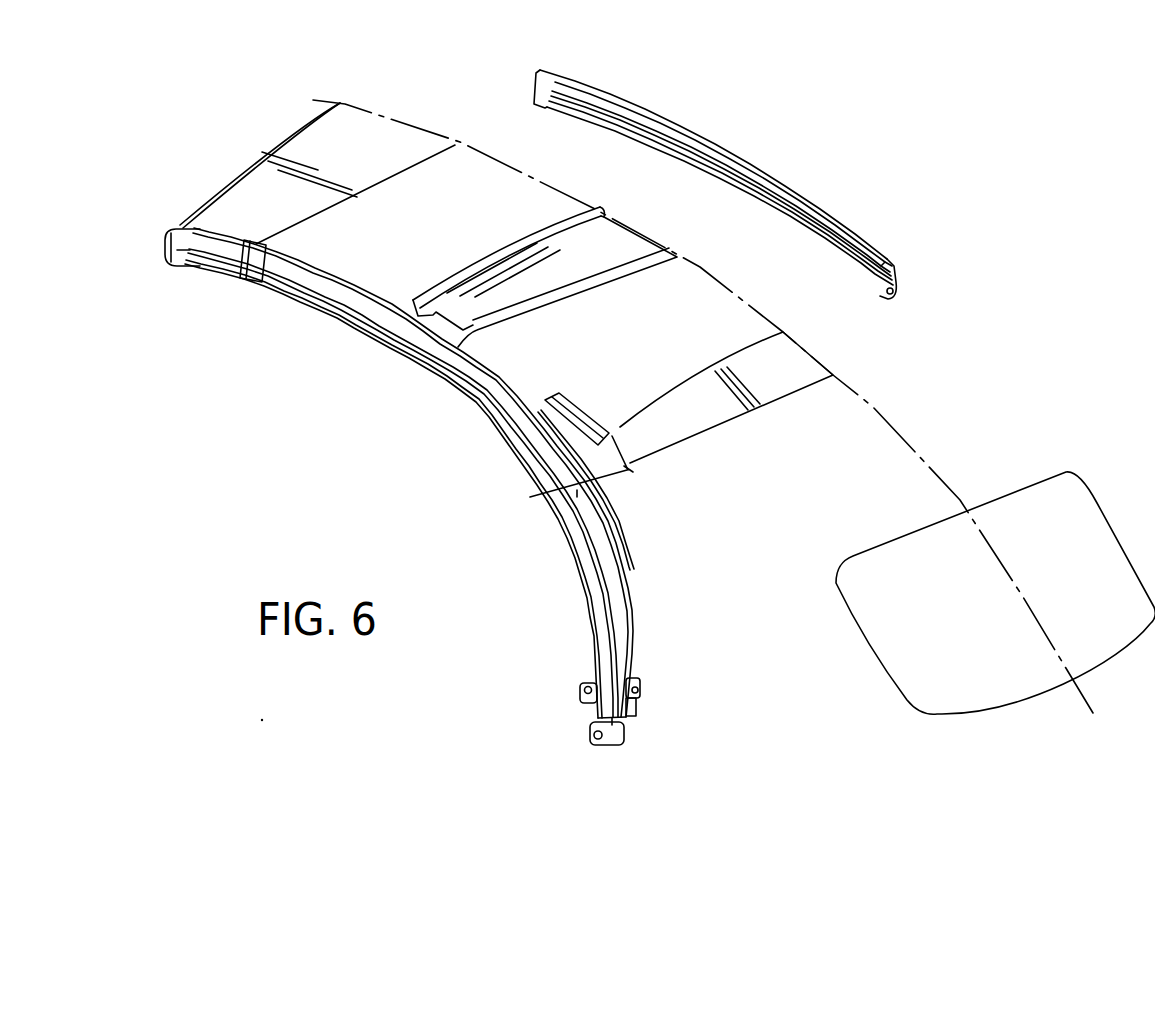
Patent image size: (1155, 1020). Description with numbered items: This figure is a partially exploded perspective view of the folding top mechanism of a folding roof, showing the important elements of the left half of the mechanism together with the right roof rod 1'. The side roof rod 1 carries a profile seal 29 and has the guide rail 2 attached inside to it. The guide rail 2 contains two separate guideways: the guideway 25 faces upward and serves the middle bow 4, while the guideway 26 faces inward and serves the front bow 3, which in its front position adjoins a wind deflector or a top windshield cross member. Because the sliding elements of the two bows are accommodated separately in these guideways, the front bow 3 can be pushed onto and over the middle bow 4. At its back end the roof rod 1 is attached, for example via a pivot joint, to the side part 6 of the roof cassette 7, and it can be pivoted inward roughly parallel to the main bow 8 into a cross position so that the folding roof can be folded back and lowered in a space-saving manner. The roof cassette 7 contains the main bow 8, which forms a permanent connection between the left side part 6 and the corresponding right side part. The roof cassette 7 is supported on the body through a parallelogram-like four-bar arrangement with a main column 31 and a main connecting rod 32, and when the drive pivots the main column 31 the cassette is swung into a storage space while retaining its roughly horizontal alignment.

The side roof rod 1 is at (399, 473).
The right roof rod 1' is at (715, 163).
The guide rail 2 is at (257, 272).
The front bow 3 is at (277, 190).
The middle bow 4 is at (525, 268).
The side part 6 is at (586, 462).
The roof cassette 7 is at (630, 475).
The main bow 8 is at (727, 404).
The guideway 25 is at (870, 250).
The guideway 26 is at (863, 263).
The profile seal 29 is at (375, 327).
The main column 31 is at (613, 740).
The main connecting rod 32 is at (634, 630).